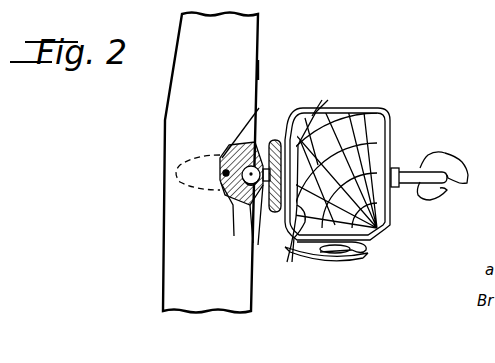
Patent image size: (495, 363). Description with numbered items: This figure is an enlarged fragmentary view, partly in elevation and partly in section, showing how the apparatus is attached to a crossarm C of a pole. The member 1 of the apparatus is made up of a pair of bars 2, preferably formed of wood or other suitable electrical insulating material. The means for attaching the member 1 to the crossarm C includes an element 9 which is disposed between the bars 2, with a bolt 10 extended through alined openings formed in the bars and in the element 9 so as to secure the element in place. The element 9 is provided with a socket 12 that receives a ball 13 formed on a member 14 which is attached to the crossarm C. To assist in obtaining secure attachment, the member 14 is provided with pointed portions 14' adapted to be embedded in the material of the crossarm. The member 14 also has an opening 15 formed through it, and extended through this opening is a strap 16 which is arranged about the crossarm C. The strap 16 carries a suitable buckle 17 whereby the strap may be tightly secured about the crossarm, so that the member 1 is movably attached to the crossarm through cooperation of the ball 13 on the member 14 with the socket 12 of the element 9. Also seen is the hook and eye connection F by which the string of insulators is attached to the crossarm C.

The member 1 is at (271, 53).
The bars 2 is at (257, 70).
The element 9 is at (235, 210).
The bolt 10 is at (218, 188).
The socket 12 is at (243, 140).
The ball 13 is at (262, 148).
The member 14 is at (294, 181).
The pointed portions 14' is at (313, 182).
The opening 15 is at (278, 150).
The strap 16 is at (373, 111).
The buckle 17 is at (366, 255).
The crossarm C is at (382, 138).
The hook and eye connection F is at (420, 163).